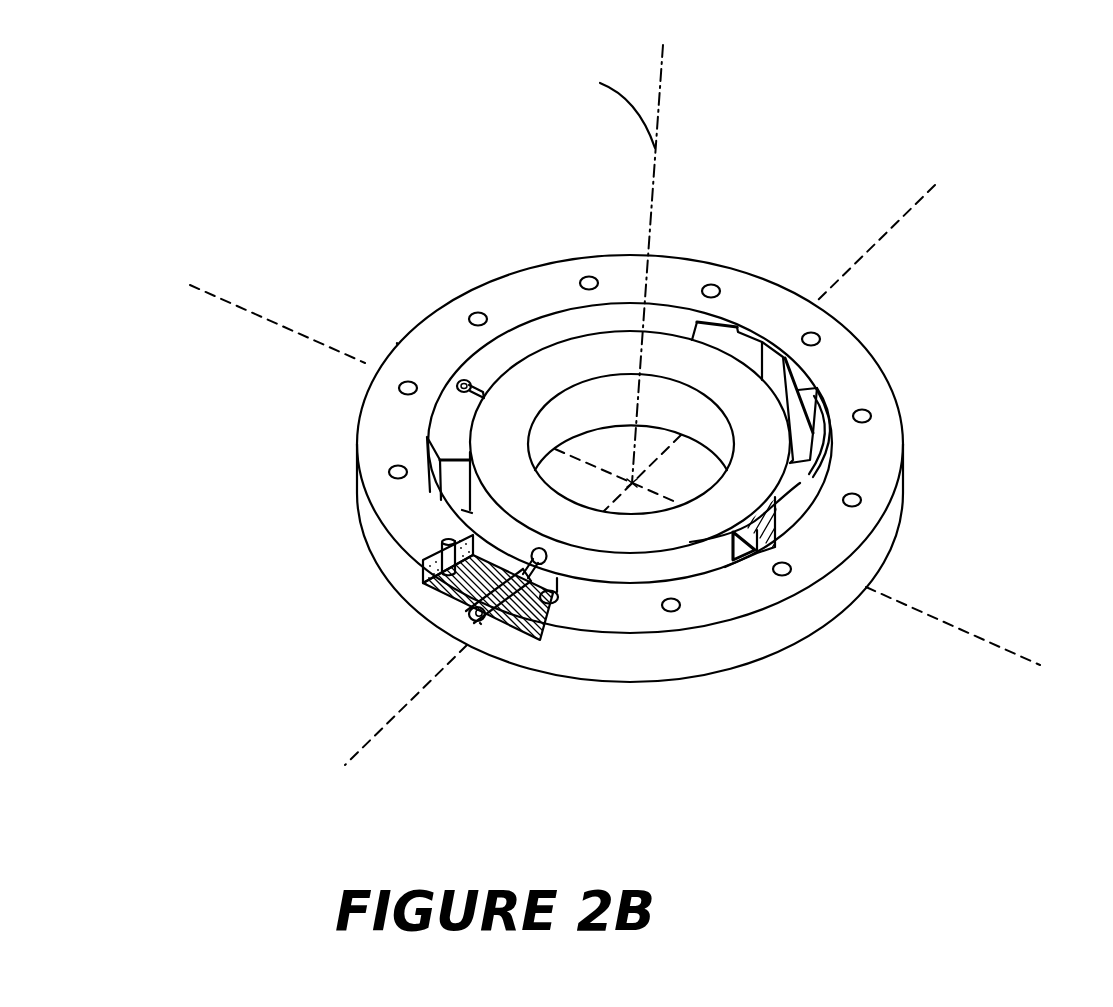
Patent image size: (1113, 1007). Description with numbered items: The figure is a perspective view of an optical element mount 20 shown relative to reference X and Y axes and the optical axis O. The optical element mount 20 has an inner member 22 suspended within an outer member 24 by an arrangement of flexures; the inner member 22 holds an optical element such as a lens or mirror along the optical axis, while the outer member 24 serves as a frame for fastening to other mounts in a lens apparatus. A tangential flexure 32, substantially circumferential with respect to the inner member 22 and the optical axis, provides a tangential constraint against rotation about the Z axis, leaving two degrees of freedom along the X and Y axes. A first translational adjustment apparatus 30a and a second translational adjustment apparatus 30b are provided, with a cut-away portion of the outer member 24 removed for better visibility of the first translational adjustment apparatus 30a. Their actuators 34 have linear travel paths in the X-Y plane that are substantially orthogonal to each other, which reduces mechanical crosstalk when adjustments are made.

The optical element mount 20 is at (180, 212).
The inner member 22 is at (763, 517).
The outer member 24 is at (571, 262).
The first translational adjustment apparatus 30a is at (480, 613).
The second translational adjustment apparatus 30b is at (463, 383).
The tangential flexure 32 is at (817, 387).
The actuators 34 is at (397, 343).